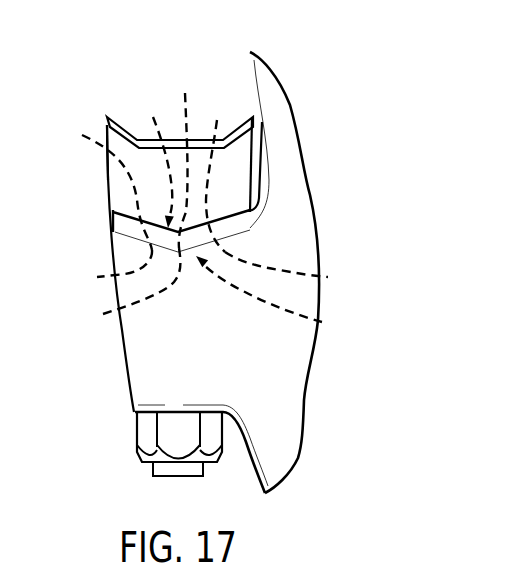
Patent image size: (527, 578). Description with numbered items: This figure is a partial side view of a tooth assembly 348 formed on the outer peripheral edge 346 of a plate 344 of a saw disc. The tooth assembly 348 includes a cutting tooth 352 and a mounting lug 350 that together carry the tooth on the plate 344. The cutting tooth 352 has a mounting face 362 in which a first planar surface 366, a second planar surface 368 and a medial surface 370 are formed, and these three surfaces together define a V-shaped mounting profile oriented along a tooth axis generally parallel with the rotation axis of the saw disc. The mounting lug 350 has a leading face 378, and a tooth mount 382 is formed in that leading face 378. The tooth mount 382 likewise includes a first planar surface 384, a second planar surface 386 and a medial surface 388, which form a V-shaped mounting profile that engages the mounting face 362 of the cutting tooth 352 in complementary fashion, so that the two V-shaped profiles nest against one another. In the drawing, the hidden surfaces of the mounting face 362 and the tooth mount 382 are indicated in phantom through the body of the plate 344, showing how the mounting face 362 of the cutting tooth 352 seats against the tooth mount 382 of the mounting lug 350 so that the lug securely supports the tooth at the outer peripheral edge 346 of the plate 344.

The plate 344 is at (332, 221).
The outer peripheral edge 346 is at (252, 70).
The tooth assembly 348 is at (116, 62).
The mounting lug 350 is at (111, 375).
The cutting tooth 352 is at (99, 175).
The mounting face 362 is at (150, 156).
The first planar surface 366 is at (96, 180).
The second planar surface 368 is at (226, 172).
The medial surface 370 is at (188, 157).
The leading face 378 is at (280, 296).
The tooth mount 382 is at (99, 222).
The first planar surface 384 is at (105, 270).
The second planar surface 386 is at (299, 271).
The medial surface 388 is at (120, 290).